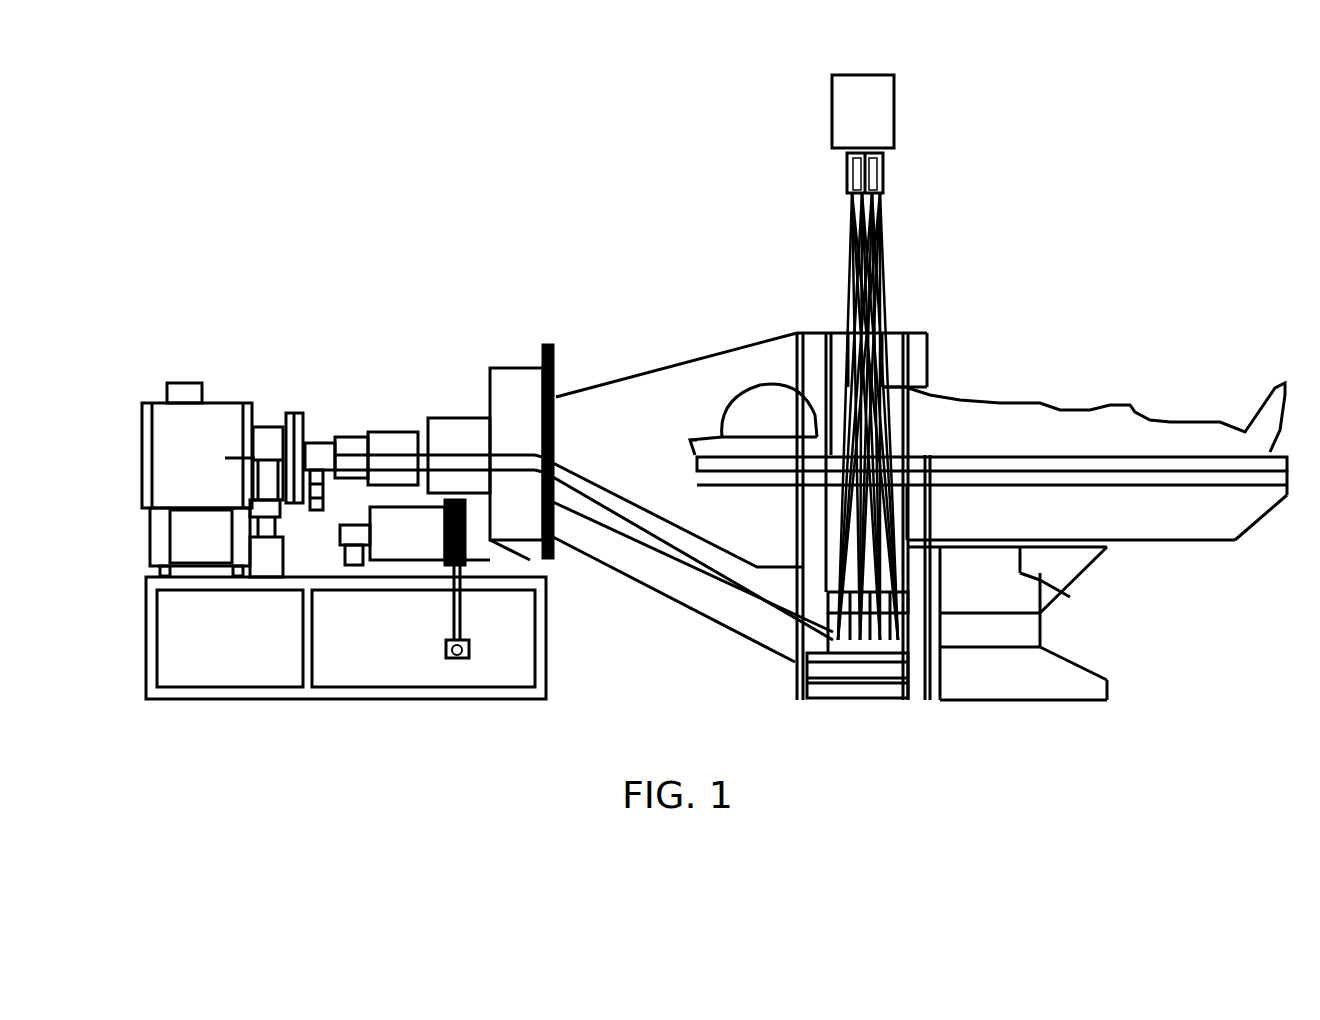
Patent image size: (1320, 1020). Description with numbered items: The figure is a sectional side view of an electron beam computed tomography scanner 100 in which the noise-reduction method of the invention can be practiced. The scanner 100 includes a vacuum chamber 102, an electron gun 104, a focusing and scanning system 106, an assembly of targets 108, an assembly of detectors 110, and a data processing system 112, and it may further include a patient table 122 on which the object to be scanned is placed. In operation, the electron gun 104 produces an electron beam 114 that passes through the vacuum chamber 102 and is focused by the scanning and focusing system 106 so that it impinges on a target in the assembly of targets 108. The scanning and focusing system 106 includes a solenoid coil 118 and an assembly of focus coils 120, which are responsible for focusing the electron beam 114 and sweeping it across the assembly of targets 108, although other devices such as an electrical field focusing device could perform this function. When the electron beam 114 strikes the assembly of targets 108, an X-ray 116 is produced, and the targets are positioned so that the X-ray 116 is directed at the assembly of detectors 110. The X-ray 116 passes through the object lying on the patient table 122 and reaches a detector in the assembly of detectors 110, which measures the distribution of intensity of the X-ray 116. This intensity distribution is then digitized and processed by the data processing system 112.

The EBCT scanner 100 is at (252, 126).
The vacuum chamber 102 is at (350, 437).
The electron gun 104 is at (272, 427).
The focusing and scanning system 106 is at (406, 340).
The assembly of targets 108 is at (786, 687).
The assembly of detectors 110 is at (847, 168).
The data processing system 112 is at (832, 103).
The electron beam 114 is at (605, 528).
The X-ray 116 is at (840, 517).
The solenoid coil 118 is at (403, 432).
The assembly of focus coils 120 is at (462, 418).
The patient table 122 is at (1133, 547).